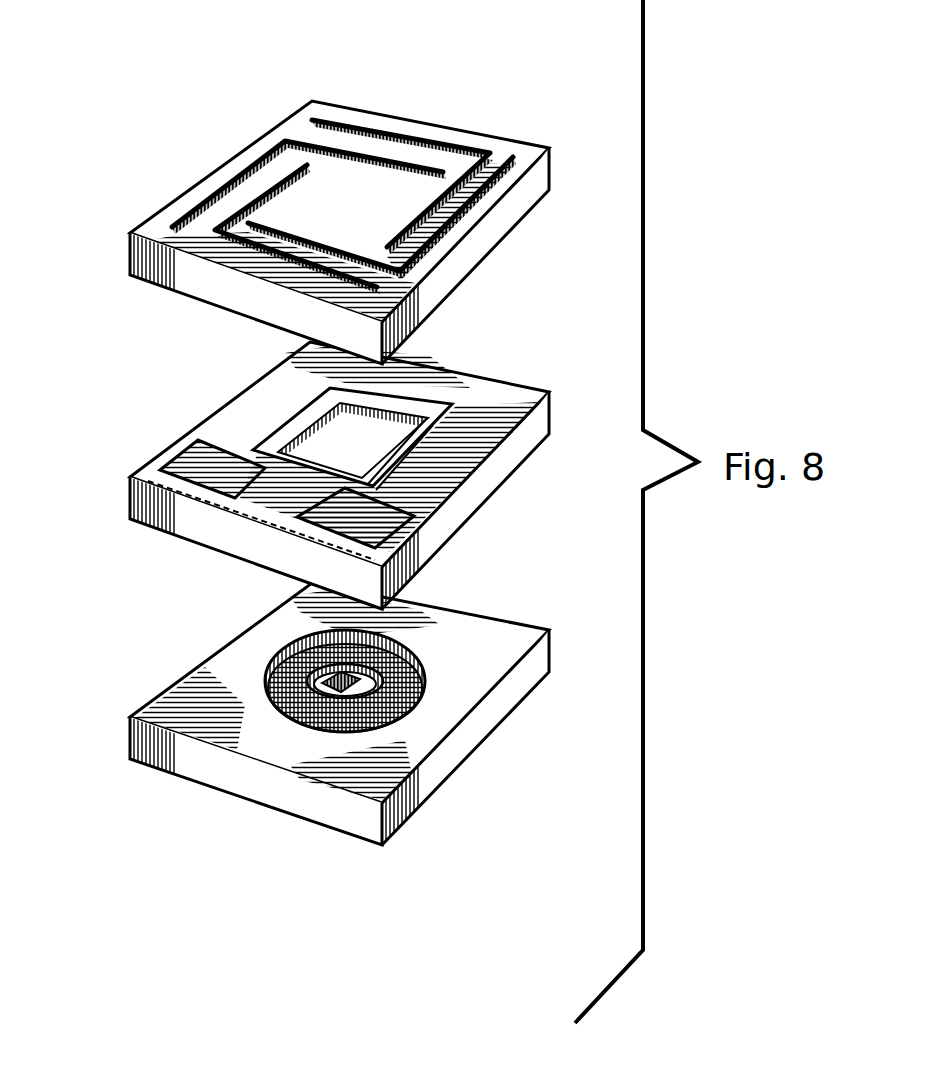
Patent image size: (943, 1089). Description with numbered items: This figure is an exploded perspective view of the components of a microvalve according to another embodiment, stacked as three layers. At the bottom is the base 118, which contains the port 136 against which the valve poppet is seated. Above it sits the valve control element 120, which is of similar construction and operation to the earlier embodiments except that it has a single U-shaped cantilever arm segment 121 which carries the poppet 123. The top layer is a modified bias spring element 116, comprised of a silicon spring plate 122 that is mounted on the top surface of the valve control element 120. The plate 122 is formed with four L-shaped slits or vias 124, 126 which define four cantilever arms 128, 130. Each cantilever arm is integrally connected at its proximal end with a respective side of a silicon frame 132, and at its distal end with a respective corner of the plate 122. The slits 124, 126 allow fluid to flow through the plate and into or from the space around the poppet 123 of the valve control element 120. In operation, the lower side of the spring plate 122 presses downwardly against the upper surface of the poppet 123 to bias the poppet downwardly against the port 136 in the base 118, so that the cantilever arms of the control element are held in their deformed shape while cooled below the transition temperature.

The bias spring element 116 is at (247, 118).
The base 118 is at (183, 673).
The valve control element 120 is at (197, 418).
The U-shaped cantilever arm segment 121 is at (450, 380).
The silicon spring plate 122 is at (273, 210).
The poppet 123 is at (405, 470).
The L-shaped slit 124 is at (188, 206).
The L-shaped slit 126 is at (343, 121).
The cantilever arm 128 is at (282, 135).
The cantilever arm 130 is at (403, 152).
The silicon frame 132 is at (132, 258).
The port 136 is at (393, 665).